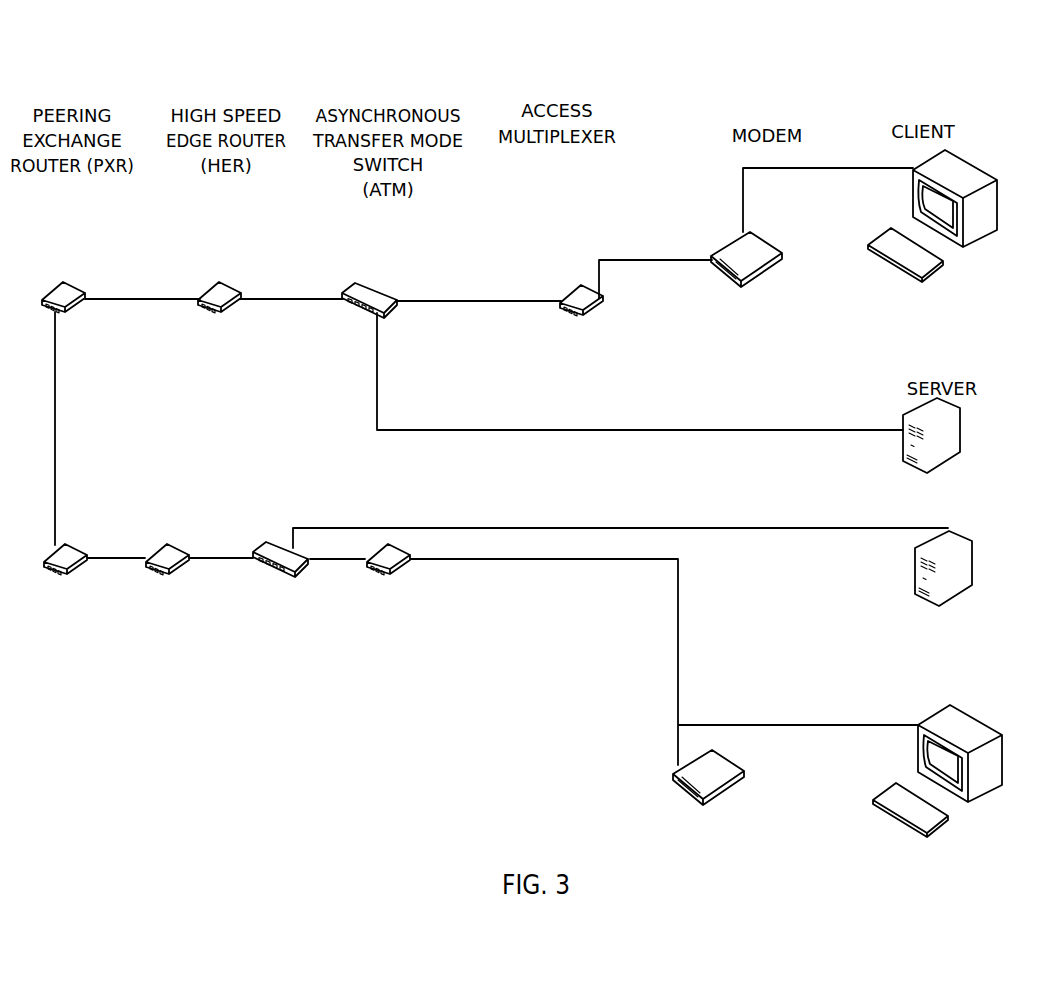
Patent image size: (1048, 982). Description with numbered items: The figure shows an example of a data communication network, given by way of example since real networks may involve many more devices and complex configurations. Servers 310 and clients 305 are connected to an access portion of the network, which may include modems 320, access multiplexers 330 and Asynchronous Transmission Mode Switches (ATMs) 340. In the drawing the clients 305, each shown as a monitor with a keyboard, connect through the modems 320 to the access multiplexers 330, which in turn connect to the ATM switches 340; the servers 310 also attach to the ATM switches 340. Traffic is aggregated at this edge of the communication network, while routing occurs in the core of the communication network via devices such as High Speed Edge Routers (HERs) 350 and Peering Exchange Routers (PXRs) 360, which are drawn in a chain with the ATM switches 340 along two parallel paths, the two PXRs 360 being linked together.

The client 305 is at (997, 234).
The server 310 is at (960, 450).
The modem 320 is at (783, 256).
The access multiplexer 330 is at (596, 312).
The Asynchronous Transmission Mode Switch (ATM) 340 is at (352, 303).
The High Speed Edge Router (HER) 350 is at (233, 310).
The Peering Exchange Router (PXR) 360 is at (74, 311).